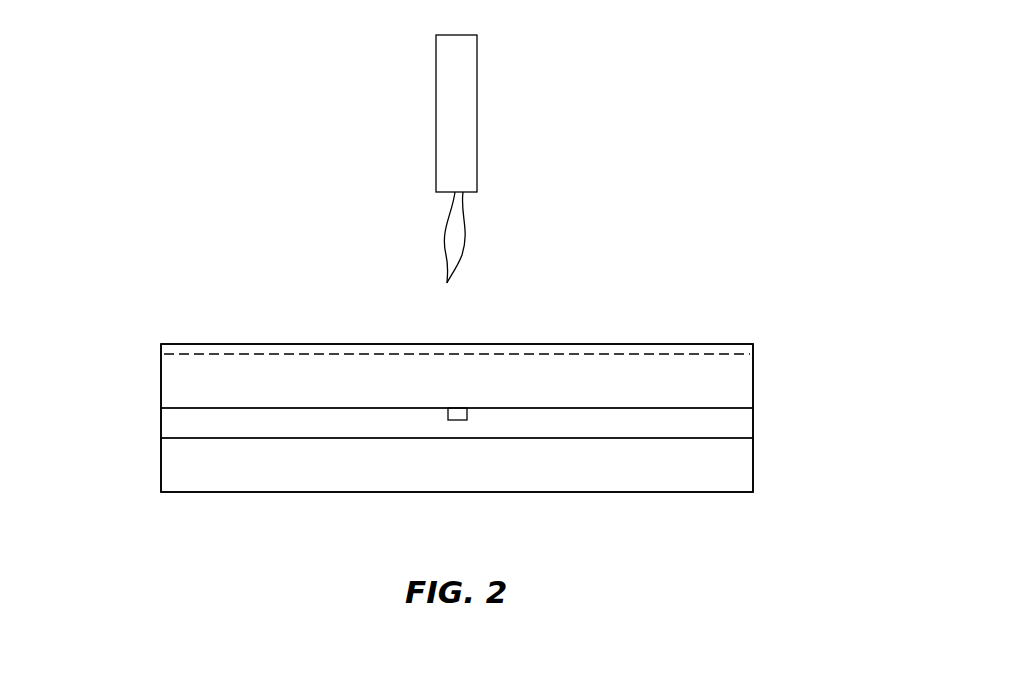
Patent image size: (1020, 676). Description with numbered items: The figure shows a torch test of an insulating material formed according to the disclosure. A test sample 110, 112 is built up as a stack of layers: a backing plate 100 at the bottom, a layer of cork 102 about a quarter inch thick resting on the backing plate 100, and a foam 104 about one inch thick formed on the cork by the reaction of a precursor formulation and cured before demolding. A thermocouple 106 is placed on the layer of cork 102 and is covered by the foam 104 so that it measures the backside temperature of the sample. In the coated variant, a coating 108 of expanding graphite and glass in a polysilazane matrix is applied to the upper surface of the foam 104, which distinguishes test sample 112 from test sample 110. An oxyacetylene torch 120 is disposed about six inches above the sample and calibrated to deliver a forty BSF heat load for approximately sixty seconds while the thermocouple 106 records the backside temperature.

The backing plate 100 is at (753, 468).
The layer of cork 102 is at (753, 425).
The foam 104 is at (753, 377).
The thermocouple 106 is at (455, 420).
The coating 108 is at (753, 347).
The test sample 110 is at (167, 310).
The test sample 112 is at (457, 418).
The oxyacetylene torch 120 is at (477, 97).